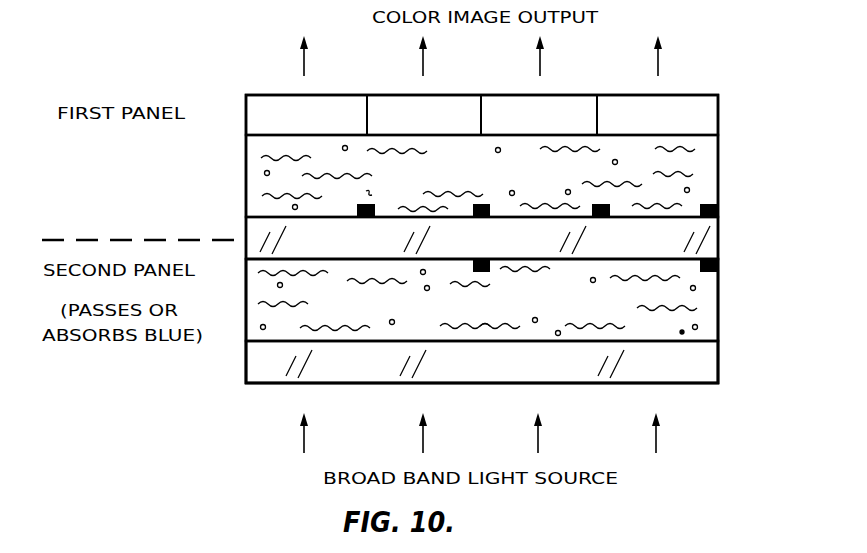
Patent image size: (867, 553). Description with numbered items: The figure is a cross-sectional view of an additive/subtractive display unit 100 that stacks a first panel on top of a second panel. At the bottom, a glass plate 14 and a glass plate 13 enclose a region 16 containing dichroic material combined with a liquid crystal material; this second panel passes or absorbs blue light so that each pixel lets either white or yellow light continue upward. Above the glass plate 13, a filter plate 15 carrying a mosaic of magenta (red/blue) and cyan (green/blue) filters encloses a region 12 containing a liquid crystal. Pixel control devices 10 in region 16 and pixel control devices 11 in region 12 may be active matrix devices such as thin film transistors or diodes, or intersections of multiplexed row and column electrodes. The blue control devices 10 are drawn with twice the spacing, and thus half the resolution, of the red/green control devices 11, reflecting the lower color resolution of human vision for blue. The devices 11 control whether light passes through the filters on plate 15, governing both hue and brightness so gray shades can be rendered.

The additive/subtractive display unit 100 is at (252, 70).
The filter plate 15 is at (720, 112).
The region containing a liquid crystal 12 is at (246, 179).
The pixel control devices 11 is at (705, 203).
The glass plate 13 is at (720, 237).
The pixel control devices 10 is at (720, 291).
The glass plate 14 is at (720, 362).
The region containing dichroic material combined with a liquid crystal material 16 is at (246, 323).